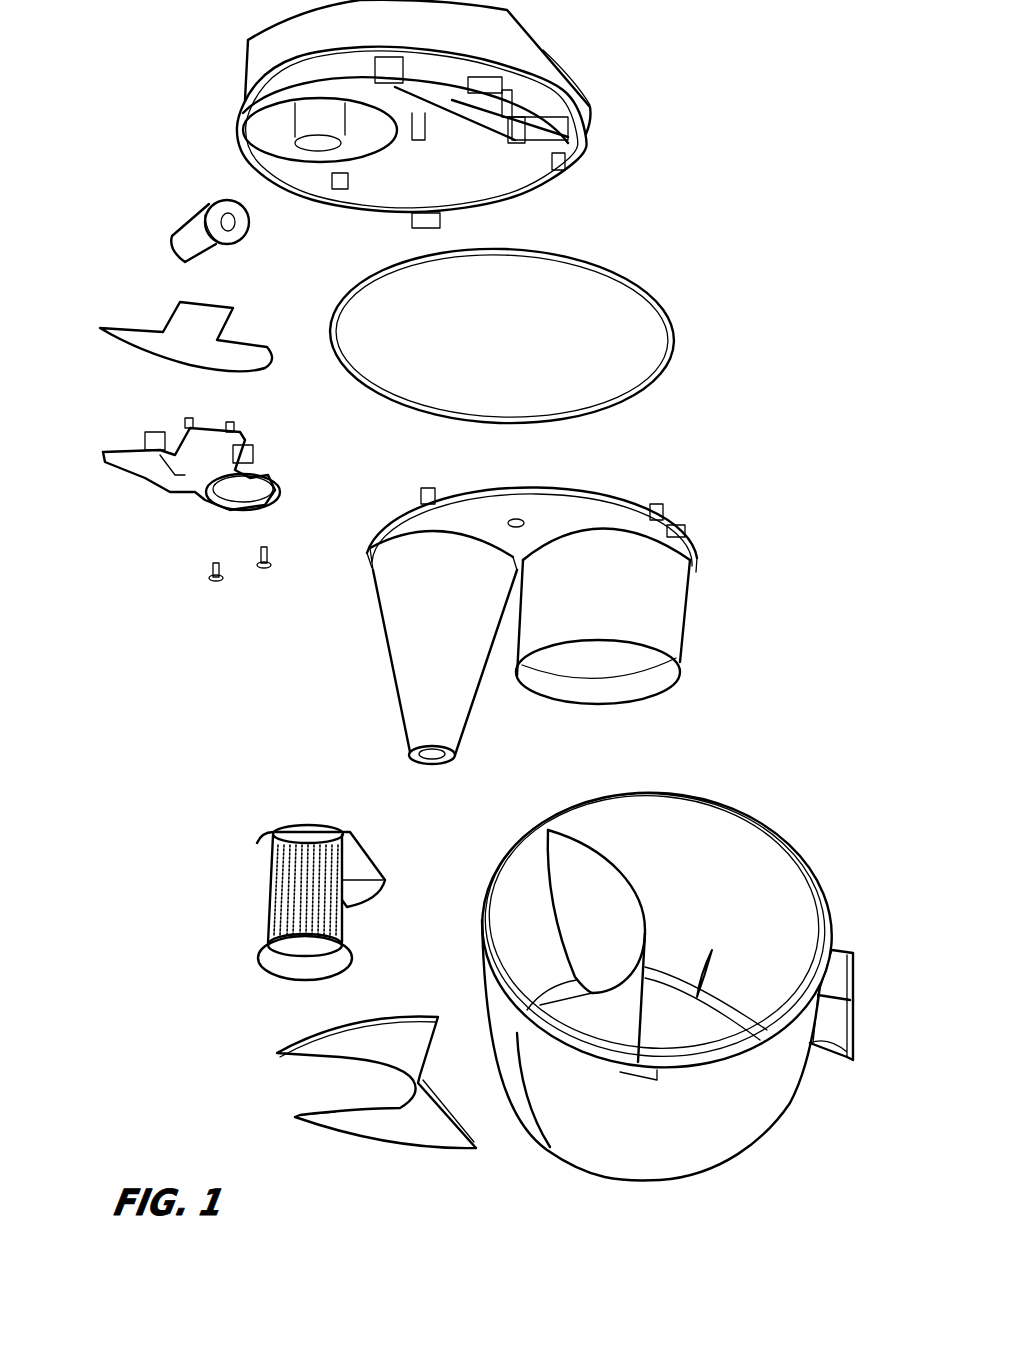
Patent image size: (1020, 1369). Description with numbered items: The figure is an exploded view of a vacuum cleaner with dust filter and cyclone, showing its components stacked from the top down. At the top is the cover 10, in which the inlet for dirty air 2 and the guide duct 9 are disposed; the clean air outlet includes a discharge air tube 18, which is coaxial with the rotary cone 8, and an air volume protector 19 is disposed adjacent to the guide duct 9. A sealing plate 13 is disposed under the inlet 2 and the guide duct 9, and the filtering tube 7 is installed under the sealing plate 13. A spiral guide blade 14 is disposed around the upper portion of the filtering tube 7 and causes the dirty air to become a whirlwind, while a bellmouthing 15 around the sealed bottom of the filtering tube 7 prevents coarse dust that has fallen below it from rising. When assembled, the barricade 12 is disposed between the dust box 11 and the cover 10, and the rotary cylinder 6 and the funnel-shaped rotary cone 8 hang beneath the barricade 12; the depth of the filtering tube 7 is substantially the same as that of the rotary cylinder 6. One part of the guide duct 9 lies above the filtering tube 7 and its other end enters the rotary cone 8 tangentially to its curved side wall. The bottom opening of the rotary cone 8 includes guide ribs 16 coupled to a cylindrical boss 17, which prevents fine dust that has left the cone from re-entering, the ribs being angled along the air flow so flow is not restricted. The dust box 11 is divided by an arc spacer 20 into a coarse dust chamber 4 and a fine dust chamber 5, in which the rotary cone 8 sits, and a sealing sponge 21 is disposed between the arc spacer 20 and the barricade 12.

The cover 10 is at (412, 114).
The inlet for dirty air 2 is at (263, 52).
The discharge air tube 18 is at (297, 128).
The guide duct 9 is at (556, 152).
The air volume protector 19 is at (198, 222).
The sealing plate 13 is at (145, 448).
The barricade 12 is at (540, 503).
The rotary cone 8 is at (427, 668).
The rotary cylinder 6 is at (655, 612).
The cylindrical boss 17 is at (420, 765).
The guide ribs 16 is at (447, 765).
The arc spacer 20 is at (607, 848).
The coarse dust chamber 4 is at (652, 966).
The fine dust chamber 5 is at (535, 918).
The spiral guide blade 14 is at (370, 842).
The filtering tube 7 is at (268, 893).
The bellmouthing 15 is at (263, 960).
The sealing sponge 21 is at (325, 1117).
The dust box 11 is at (763, 1090).